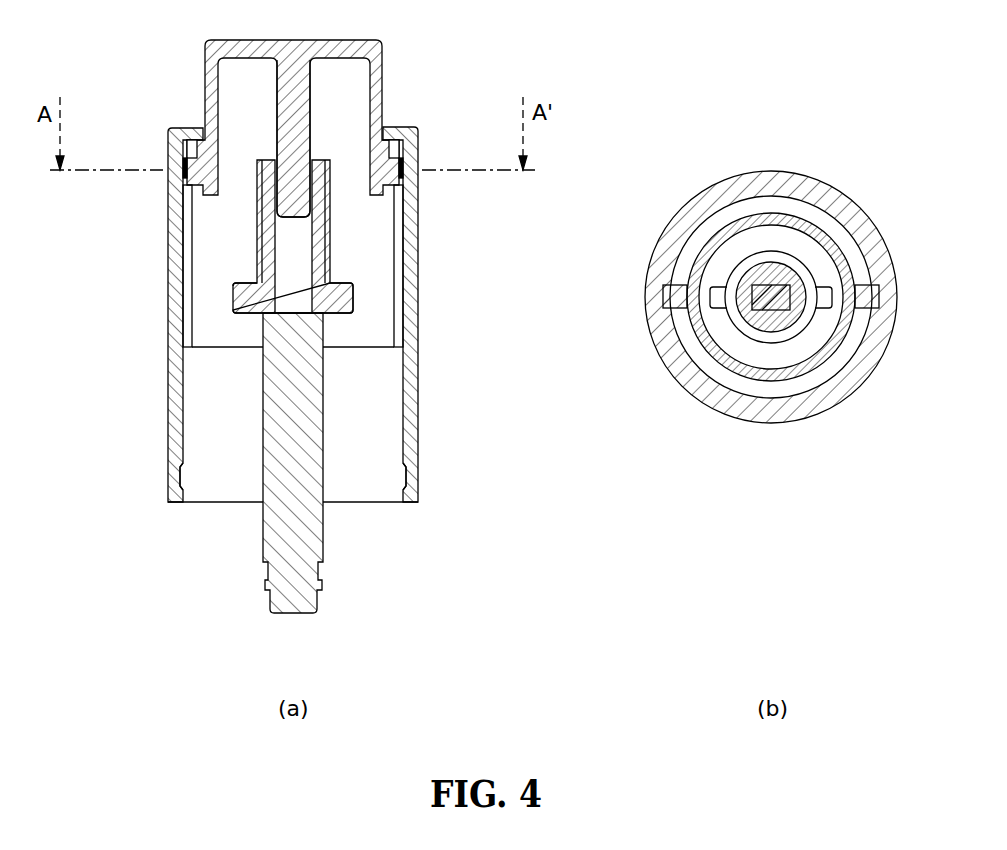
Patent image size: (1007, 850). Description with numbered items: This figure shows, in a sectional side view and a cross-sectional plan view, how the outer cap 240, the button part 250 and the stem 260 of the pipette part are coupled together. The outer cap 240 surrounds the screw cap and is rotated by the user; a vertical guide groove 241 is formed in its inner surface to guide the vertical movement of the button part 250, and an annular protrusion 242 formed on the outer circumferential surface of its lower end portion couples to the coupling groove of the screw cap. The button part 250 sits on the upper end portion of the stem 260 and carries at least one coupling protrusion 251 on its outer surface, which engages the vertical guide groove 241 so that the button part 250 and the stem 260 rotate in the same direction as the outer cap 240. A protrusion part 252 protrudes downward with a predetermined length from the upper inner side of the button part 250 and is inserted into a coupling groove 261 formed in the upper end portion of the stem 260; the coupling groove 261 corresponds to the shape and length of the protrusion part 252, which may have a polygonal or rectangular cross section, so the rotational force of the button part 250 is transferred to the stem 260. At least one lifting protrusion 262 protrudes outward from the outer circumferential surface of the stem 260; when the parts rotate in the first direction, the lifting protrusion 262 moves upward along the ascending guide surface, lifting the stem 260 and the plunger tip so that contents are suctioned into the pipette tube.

The outer cap 240 is at (168, 201).
The vertical guide groove 241 is at (187, 269).
The annular protrusion 242 is at (412, 477).
The button part 250 is at (205, 66).
The coupling protrusion 251 is at (185, 168).
The protrusion part 252 is at (293, 103).
The stem 260 is at (334, 382).
The coupling groove 261 is at (330, 234).
The lifting protrusion 262 is at (347, 297).